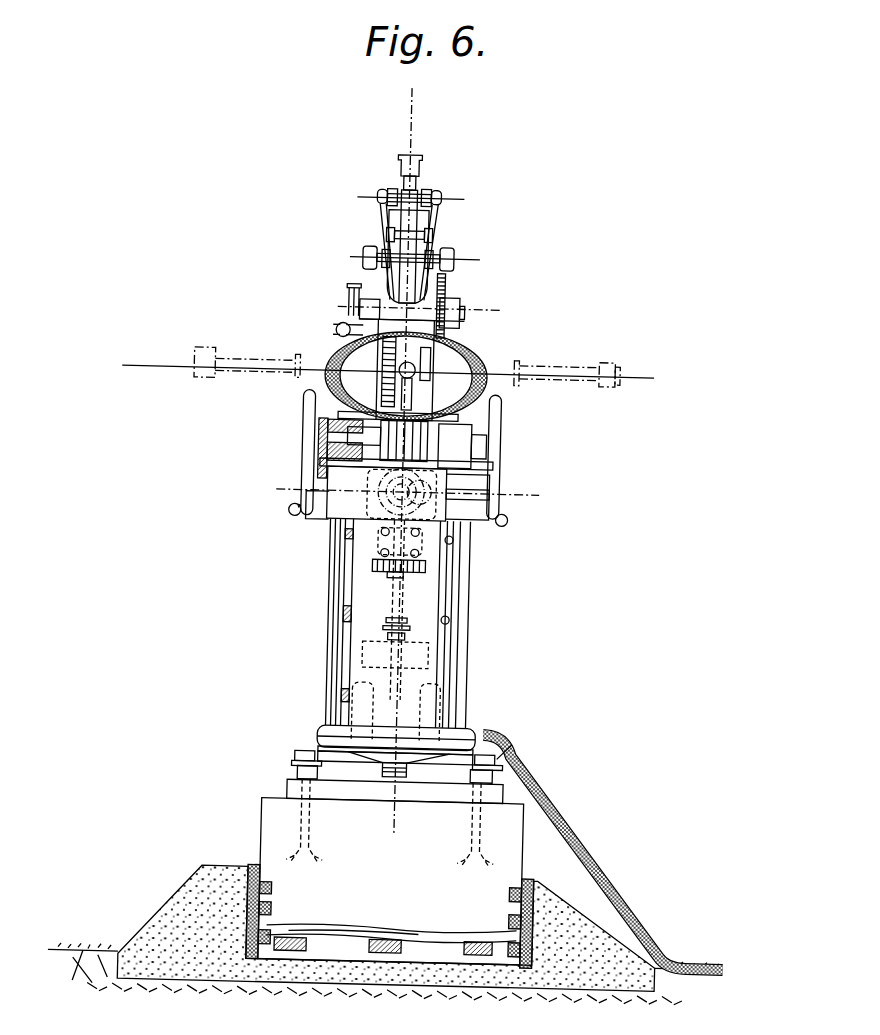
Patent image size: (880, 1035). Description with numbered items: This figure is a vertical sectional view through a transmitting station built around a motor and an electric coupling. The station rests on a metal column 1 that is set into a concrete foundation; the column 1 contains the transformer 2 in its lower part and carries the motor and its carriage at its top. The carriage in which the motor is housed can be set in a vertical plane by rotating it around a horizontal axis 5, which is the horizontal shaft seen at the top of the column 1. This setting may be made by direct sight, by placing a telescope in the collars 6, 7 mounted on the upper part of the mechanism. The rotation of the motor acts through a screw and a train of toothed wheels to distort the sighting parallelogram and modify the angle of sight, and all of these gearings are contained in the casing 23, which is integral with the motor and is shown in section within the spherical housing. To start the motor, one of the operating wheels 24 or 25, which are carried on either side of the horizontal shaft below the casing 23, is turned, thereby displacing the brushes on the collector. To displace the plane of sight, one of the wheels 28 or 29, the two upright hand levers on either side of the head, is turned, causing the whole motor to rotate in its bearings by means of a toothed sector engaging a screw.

The metal column 1 is at (395, 609).
The transformer 2 is at (396, 691).
The horizontal axis 5 is at (540, 440).
The collar 6 is at (333, 331).
The collar 7 is at (339, 316).
The casing 23 is at (405, 369).
The operating wheel 24 is at (308, 505).
The operating wheel 25 is at (506, 504).
The wheel 28 is at (310, 402).
The wheel 29 is at (498, 410).